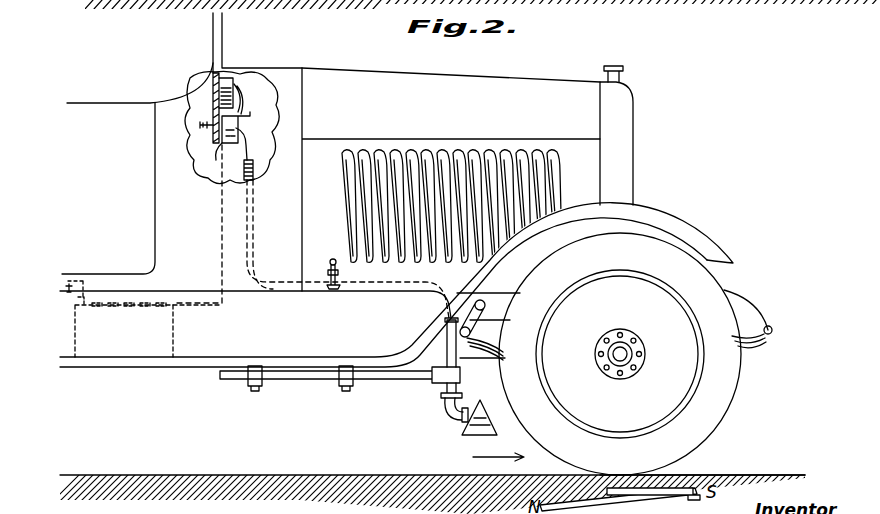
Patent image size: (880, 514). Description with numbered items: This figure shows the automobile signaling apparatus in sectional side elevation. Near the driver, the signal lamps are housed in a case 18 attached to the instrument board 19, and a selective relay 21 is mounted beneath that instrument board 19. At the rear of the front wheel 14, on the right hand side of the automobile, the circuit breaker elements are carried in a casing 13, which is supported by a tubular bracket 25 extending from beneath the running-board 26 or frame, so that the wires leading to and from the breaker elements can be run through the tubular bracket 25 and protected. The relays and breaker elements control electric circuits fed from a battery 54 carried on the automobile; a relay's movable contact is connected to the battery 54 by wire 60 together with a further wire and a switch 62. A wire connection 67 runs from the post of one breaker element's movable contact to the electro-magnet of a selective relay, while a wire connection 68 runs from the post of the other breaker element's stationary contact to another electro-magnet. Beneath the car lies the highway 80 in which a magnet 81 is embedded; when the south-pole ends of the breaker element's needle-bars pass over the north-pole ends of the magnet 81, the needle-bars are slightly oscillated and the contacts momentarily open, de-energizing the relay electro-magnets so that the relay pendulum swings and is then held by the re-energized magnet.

The casing 13 is at (460, 424).
The front wheel 14 is at (727, 367).
The case 18 is at (224, 73).
The instrument board 19 is at (198, 118).
The selective relay 21 is at (240, 122).
The tubular bracket 25 is at (399, 377).
The running-board 26 is at (313, 357).
The battery 54 is at (176, 342).
The wire 60 is at (238, 134).
The switch 62 is at (214, 150).
The wire connection 67 is at (255, 178).
The wire connection 68 is at (216, 178).
The highway 80 is at (733, 475).
The magnet 81 is at (614, 486).